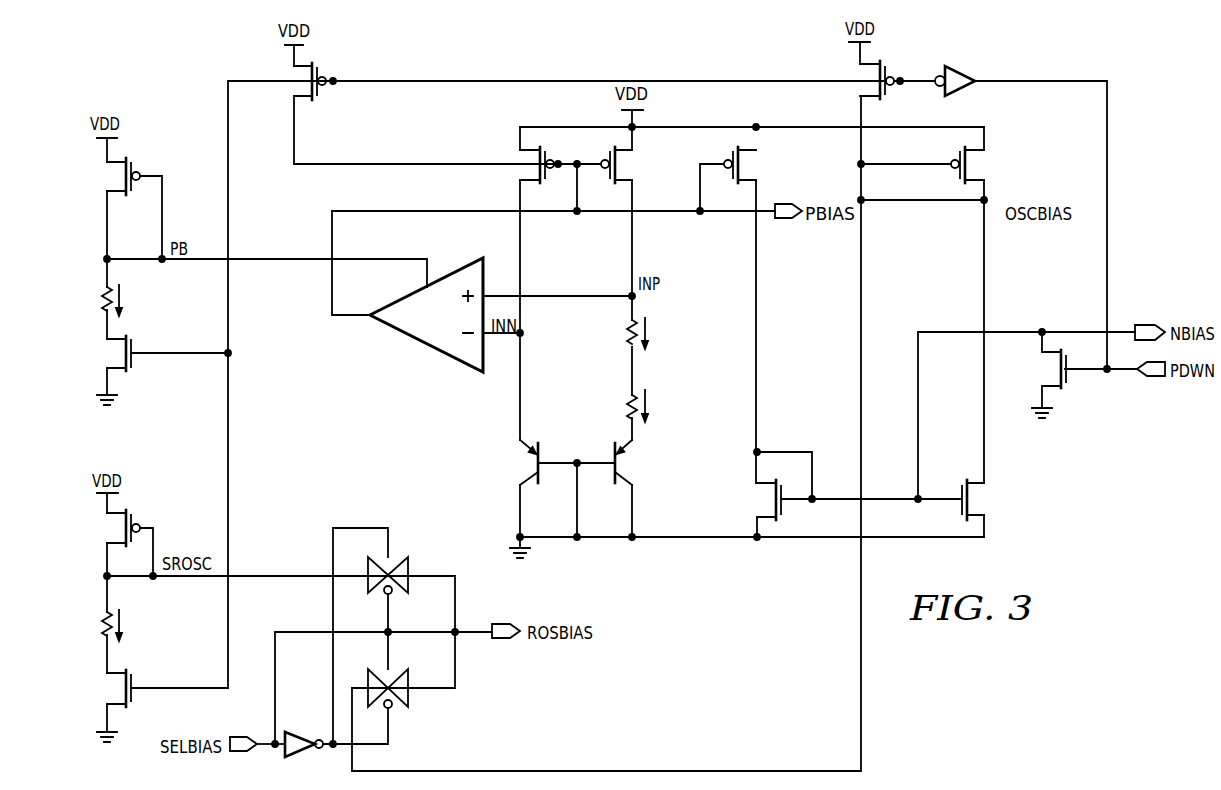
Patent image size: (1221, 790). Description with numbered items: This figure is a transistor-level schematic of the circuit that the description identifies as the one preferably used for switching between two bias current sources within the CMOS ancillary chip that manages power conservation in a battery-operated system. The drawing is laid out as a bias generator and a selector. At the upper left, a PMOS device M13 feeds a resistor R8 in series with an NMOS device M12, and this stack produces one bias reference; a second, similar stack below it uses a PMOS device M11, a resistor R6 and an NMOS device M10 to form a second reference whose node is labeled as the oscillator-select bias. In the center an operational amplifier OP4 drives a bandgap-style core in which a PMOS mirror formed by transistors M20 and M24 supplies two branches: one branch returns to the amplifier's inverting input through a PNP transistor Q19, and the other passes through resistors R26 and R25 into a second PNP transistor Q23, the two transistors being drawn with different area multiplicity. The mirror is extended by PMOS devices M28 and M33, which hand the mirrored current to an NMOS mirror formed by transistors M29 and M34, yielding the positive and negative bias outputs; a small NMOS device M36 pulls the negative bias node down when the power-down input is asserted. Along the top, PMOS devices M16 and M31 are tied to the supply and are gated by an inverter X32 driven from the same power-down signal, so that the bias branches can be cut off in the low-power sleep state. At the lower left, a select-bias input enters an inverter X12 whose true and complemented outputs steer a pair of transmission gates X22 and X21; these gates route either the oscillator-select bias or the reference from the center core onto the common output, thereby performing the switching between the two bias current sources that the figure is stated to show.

The NMOS transistor M10 is at (137, 688).
The PMOS transistor M11 is at (100, 529).
The NMOS transistor M12 is at (139, 355).
The PMOS transistor M13 is at (99, 176).
The PMOS transistor M16 is at (279, 81).
The PMOS transistor M20 is at (513, 175).
The PMOS transistor M24 is at (639, 166).
The PMOS transistor M28 is at (763, 161).
The NMOS transistor M29 is at (837, 507).
The PMOS transistor M31 is at (845, 80).
The PMOS transistor M33 is at (989, 165).
The NMOS transistor M34 is at (996, 498).
The NMOS transistor M36 is at (1061, 366).
The resistor R6 is at (145, 621).
The resistor R8 is at (145, 295).
The resistor R25 is at (670, 408).
The resistor R26 is at (670, 333).
The PNP transistor Q19 is at (501, 464).
The PNP transistor Q23 is at (671, 478).
The operational amplifier OP4 is at (426, 315).
The inverter X12 is at (307, 744).
The transmission gate X21 is at (418, 709).
The transmission gate X22 is at (419, 590).
The inverter X32 is at (975, 71).